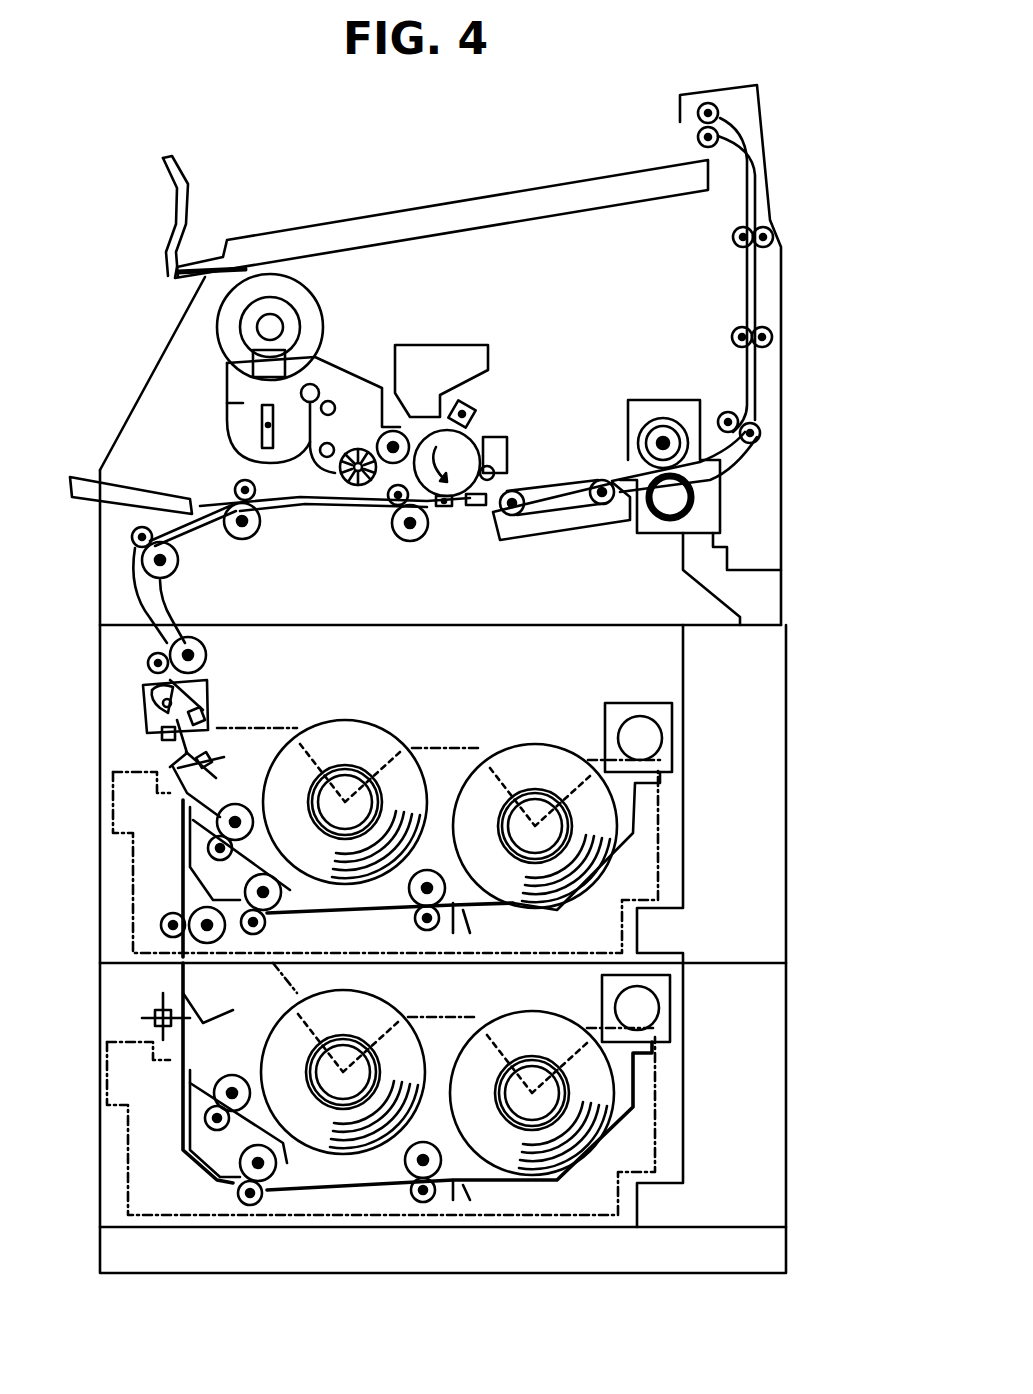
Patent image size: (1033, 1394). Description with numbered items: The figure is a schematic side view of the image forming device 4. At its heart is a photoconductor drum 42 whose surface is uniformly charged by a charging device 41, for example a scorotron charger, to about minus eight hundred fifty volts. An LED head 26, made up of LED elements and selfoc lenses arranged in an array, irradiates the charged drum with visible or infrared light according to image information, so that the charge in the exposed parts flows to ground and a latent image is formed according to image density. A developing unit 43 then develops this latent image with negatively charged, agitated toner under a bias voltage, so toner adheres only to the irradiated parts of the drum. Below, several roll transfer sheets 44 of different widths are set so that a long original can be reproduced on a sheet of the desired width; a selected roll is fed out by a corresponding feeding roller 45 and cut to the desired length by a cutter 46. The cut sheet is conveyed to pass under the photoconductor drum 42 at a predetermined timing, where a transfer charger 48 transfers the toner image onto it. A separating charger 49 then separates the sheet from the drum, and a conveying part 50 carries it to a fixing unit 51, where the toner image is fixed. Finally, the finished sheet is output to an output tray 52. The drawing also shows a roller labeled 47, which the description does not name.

The image forming device 4 is at (795, 531).
The LED head 26 is at (440, 353).
The charging device 41 is at (457, 407).
The photoconductor drum 42 is at (477, 430).
The developing unit 43 is at (347, 385).
The transfer sheet 44 is at (373, 740).
The feeding roller 45 is at (240, 807).
The cutter 46 is at (210, 687).
The feed roller 47 is at (413, 542).
The transfer charger 48 is at (440, 507).
The separating charger 49 is at (463, 517).
The conveying part 50 is at (573, 500).
The fixing unit 51 is at (697, 489).
The output tray 52 is at (460, 190).